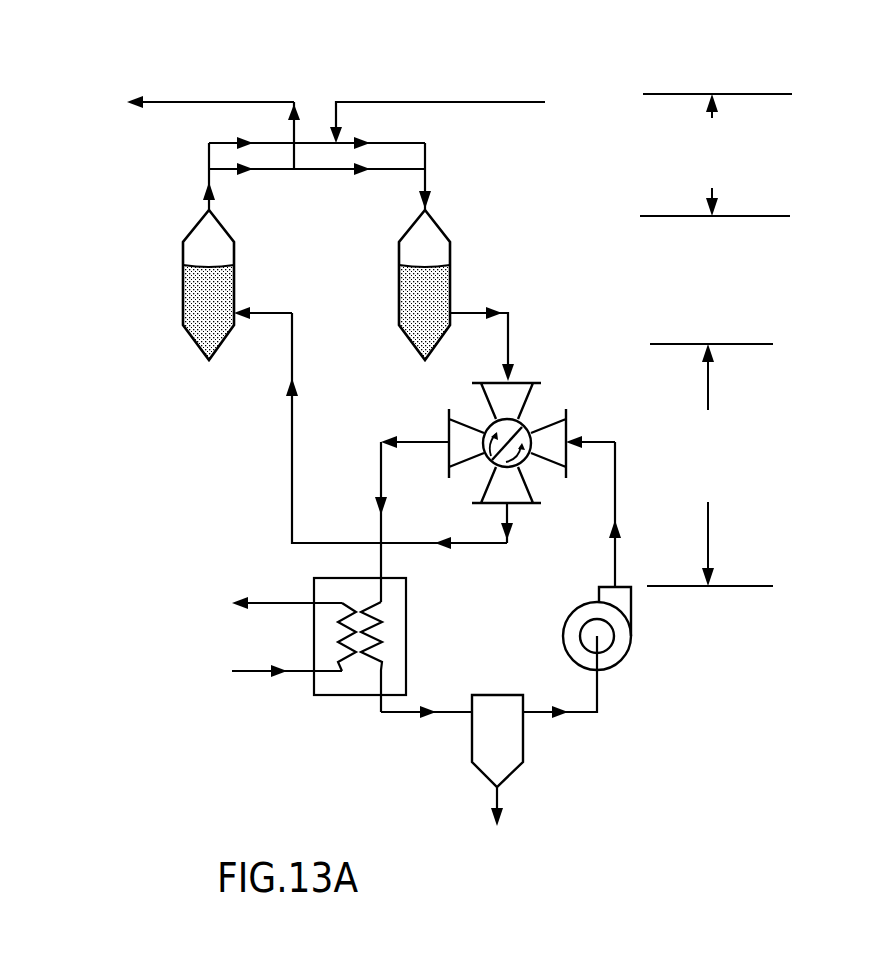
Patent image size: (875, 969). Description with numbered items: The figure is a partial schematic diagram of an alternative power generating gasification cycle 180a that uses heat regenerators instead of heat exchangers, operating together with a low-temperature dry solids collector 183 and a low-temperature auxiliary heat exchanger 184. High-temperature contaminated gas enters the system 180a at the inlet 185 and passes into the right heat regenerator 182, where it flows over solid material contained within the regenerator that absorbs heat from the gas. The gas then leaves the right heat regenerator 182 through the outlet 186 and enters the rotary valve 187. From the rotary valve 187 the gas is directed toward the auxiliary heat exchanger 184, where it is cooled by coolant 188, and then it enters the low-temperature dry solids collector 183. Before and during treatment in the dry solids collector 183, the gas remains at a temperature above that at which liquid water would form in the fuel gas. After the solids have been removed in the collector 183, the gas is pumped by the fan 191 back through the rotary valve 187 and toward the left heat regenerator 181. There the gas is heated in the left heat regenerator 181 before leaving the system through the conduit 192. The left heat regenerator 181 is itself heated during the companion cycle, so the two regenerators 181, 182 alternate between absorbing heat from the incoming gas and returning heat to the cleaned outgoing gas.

The cycle 180a is at (704, 734).
The left heat regenerator 181 is at (235, 283).
The right heat regenerator 182 is at (450, 285).
The low-temperature dry solids collector 183 is at (523, 735).
The low-temperature auxiliary heat exchanger 184 is at (406, 607).
The inlet 185 is at (438, 102).
The outlet 186 is at (510, 342).
The rotary valve 187 is at (528, 403).
The coolant 188 is at (275, 603).
The fan 191 is at (633, 637).
The conduit 192 is at (210, 102).